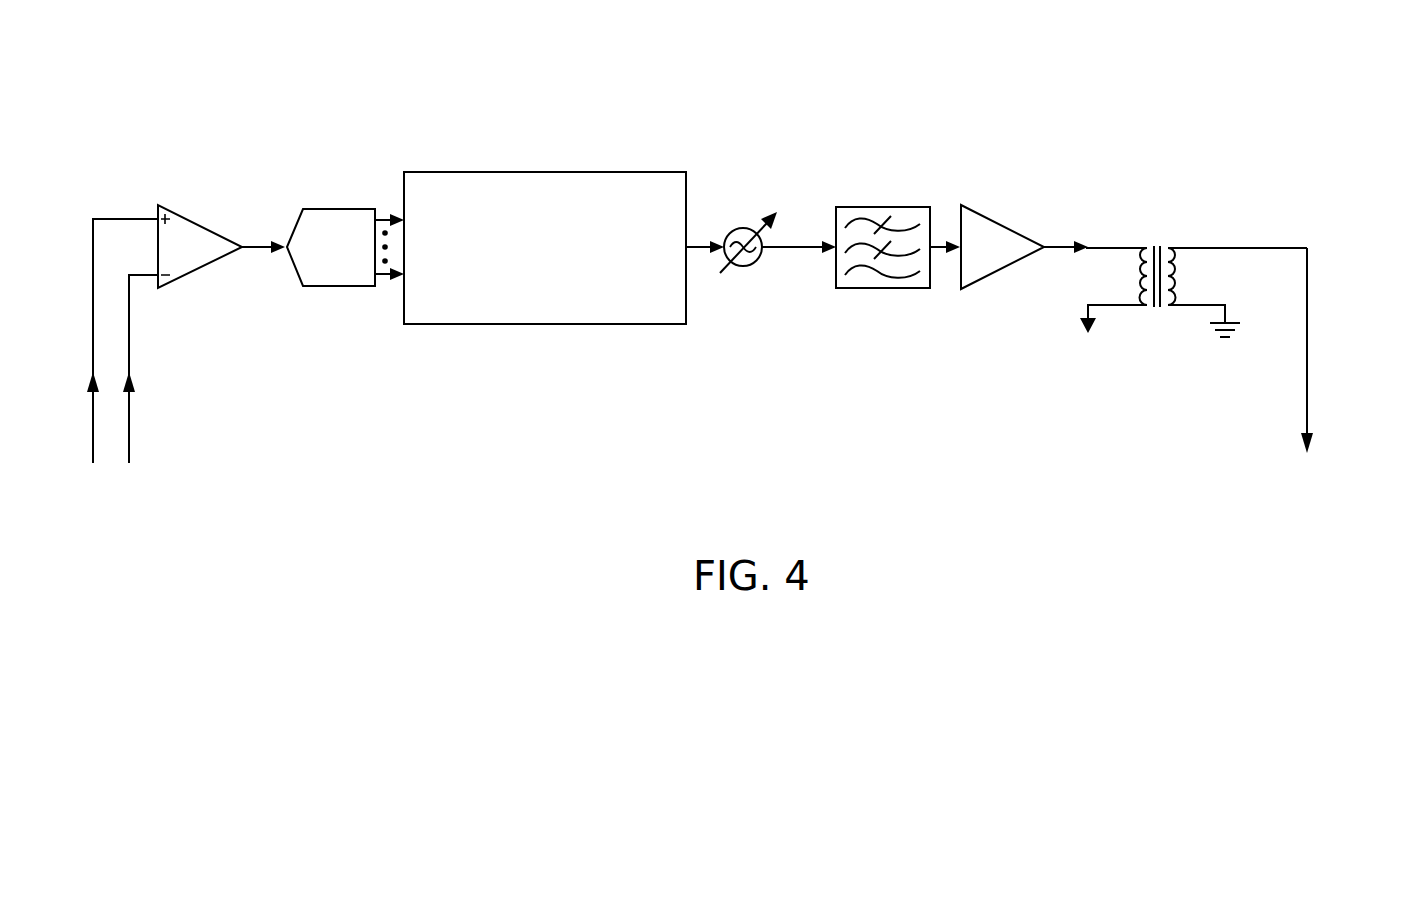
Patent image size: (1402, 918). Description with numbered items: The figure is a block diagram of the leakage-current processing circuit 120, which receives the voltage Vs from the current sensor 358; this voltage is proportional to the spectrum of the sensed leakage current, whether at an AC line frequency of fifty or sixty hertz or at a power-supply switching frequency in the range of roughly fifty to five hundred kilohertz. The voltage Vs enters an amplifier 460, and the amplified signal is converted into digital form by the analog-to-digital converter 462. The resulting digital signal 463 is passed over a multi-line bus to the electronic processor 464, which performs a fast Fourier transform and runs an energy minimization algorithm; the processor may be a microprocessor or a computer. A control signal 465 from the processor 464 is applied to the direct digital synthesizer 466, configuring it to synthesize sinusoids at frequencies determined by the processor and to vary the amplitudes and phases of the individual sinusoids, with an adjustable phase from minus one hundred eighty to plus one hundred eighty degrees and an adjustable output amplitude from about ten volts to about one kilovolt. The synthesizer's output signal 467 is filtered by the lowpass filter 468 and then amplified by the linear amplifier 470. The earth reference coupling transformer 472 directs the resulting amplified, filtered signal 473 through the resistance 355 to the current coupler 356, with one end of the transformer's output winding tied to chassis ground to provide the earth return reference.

The leakage-current processing circuit 120 is at (893, 32).
The current sensor 358 is at (122, 384).
The amplifier 460 is at (200, 272).
The analog-to-digital converter 462 is at (327, 286).
The digital signal 463 is at (393, 300).
The electronic processor 464 is at (544, 324).
The control signal 465 is at (693, 245).
The direct digital synthesizer 466 is at (743, 266).
The output signal 467 is at (805, 243).
The lowpass filter 468 is at (884, 289).
The linear amplifier 470 is at (1002, 272).
The earth reference coupling transformer 472 is at (1237, 206).
The amplified, filtered signal 473 is at (1307, 363).
The resistance 355 is at (1286, 474).
The current coupler 356 is at (1336, 474).